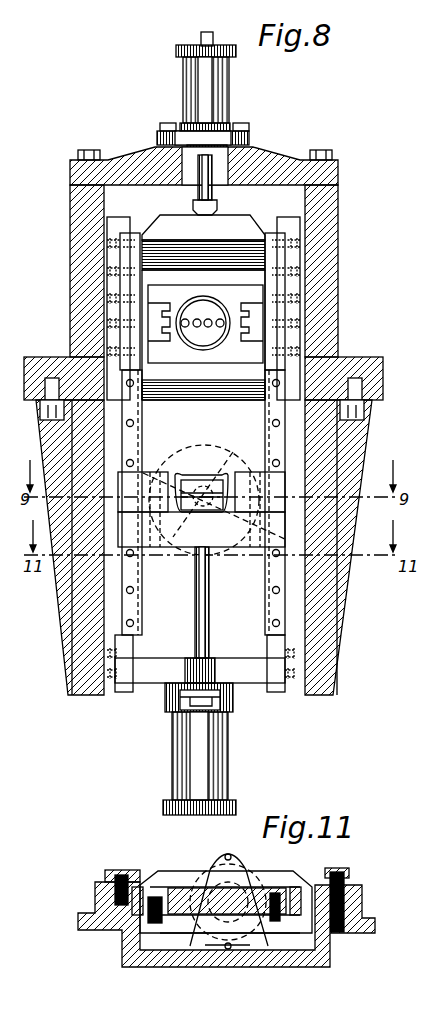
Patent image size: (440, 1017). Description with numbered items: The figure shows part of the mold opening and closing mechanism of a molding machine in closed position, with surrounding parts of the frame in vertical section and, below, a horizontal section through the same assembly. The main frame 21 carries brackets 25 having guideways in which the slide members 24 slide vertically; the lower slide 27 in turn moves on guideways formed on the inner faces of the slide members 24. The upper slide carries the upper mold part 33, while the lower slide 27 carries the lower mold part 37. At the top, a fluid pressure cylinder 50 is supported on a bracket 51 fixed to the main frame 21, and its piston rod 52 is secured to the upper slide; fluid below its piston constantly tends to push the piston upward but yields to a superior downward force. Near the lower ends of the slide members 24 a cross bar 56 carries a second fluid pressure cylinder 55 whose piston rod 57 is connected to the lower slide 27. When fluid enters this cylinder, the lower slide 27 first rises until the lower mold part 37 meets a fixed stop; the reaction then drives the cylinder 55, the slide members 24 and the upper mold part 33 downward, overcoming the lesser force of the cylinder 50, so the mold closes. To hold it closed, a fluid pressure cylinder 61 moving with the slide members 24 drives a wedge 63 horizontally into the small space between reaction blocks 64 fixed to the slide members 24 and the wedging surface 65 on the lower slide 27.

In FIG. 8, the main frame 21 is at (368, 380).
In FIG. 8, the slide members 24 is at (127, 232).
In FIG. 11, the slide members 24 is at (143, 882).
In FIG. 8, the brackets 25 is at (216, 262).
In FIG. 11, the brackets 25 is at (360, 896).
In FIG. 8, the lower slide 27 is at (205, 378).
In FIG. 11, the lower slide 27 is at (268, 896).
In FIG. 8, the upper mold part 33 is at (205, 323).
In FIG. 8, the lower mold part 37 is at (213, 335).
In FIG. 8, the fluid pressure cylinder 50 is at (183, 76).
In FIG. 8, the bracket 51 is at (270, 170).
In FIG. 8, the piston rod 52 is at (212, 190).
In FIG. 8, the second fluid pressure cylinder 55 is at (228, 735).
In FIG. 11, the second fluid pressure cylinder 55 is at (247, 872).
In FIG. 8, the cross bar 56 is at (243, 668).
In FIG. 11, the cross bar 56 is at (283, 928).
In FIG. 8, the piston rod 57 is at (195, 622).
In FIG. 8, the fluid pressure cylinder 61 is at (202, 501).
In FIG. 8, the wedge 63 is at (208, 494).
In FIG. 8, the reaction blocks 64 is at (207, 532).
In FIG. 8, the wedging surface 65 is at (226, 478).